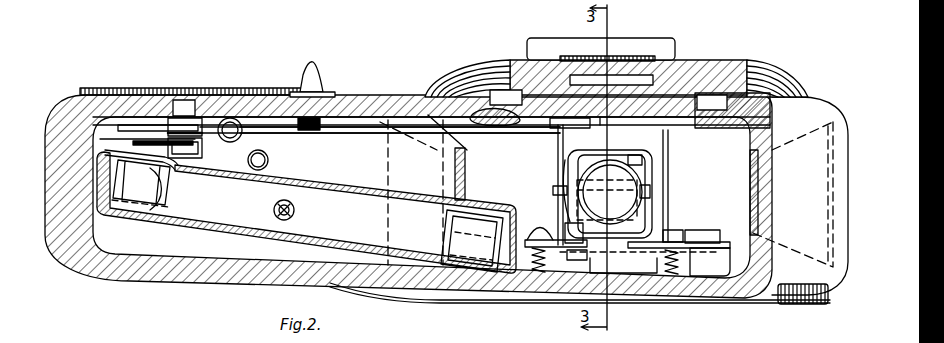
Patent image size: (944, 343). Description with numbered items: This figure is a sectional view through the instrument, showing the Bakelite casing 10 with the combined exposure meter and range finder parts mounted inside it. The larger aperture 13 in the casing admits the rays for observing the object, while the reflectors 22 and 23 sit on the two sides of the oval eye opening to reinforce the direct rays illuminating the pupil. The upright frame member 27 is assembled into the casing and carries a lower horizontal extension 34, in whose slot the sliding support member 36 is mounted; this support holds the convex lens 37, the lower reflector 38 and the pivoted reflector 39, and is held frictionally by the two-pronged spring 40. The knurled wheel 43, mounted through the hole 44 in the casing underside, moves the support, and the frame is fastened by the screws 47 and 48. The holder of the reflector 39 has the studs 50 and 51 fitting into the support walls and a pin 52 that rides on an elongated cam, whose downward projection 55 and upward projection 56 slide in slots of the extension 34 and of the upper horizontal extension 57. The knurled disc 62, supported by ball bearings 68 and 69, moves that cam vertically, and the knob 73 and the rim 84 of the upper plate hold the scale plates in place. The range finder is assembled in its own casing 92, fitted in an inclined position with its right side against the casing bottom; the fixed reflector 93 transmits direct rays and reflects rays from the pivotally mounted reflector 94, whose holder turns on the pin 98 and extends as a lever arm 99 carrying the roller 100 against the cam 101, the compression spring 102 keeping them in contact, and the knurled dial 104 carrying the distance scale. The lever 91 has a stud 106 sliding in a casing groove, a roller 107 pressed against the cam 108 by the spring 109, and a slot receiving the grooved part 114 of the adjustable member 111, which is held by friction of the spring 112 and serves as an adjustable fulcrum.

The casing 10 is at (377, 92).
The aperture 13 is at (175, 194).
The reflector 22 is at (456, 166).
The reflector 23 is at (752, 165).
The frame member 27 is at (668, 150).
The horizontal extension 34 is at (695, 265).
The sliding support member 36 is at (625, 295).
The convex lens 37 is at (610, 192).
The reflector 38 is at (633, 223).
The pivoted reflector 39 is at (640, 163).
The two-pronged spring 40 is at (578, 262).
The knurled wheel 43 is at (790, 300).
The hole in underside of casing 44 is at (700, 272).
The screw 47 is at (547, 228).
The screw 48 is at (670, 234).
The stud 50 is at (647, 192).
The stud 51 is at (563, 163).
The pin 52 is at (560, 190).
The downward projection 55 is at (540, 296).
The upward projection 56 is at (566, 140).
The upper horizontal extension 57 is at (618, 117).
The knurled disc 62 is at (792, 78).
The ball bearing 68 is at (483, 136).
The ball bearing 69 is at (738, 130).
The knob 73 is at (634, 40).
The flange or rim 84 is at (581, 338).
The lever 91 is at (366, 130).
The range finder casing 92 is at (228, 233).
The fixed reflector 93 is at (168, 203).
The pivotally mounted reflector 94 is at (477, 220).
The pin 98 is at (486, 252).
The lever arm 99 is at (340, 195).
The roller 100 is at (184, 165).
The cam 101 is at (128, 143).
The compression spring 102 is at (275, 157).
The knurled dial 104 is at (96, 86).
The pin or stud 106 is at (183, 108).
The roller 107 is at (165, 120).
The cam 108 is at (128, 126).
The spring 109 is at (236, 124).
The adjustable member 111 is at (330, 90).
The spring 112 is at (343, 100).
The grooved part 114 is at (336, 128).